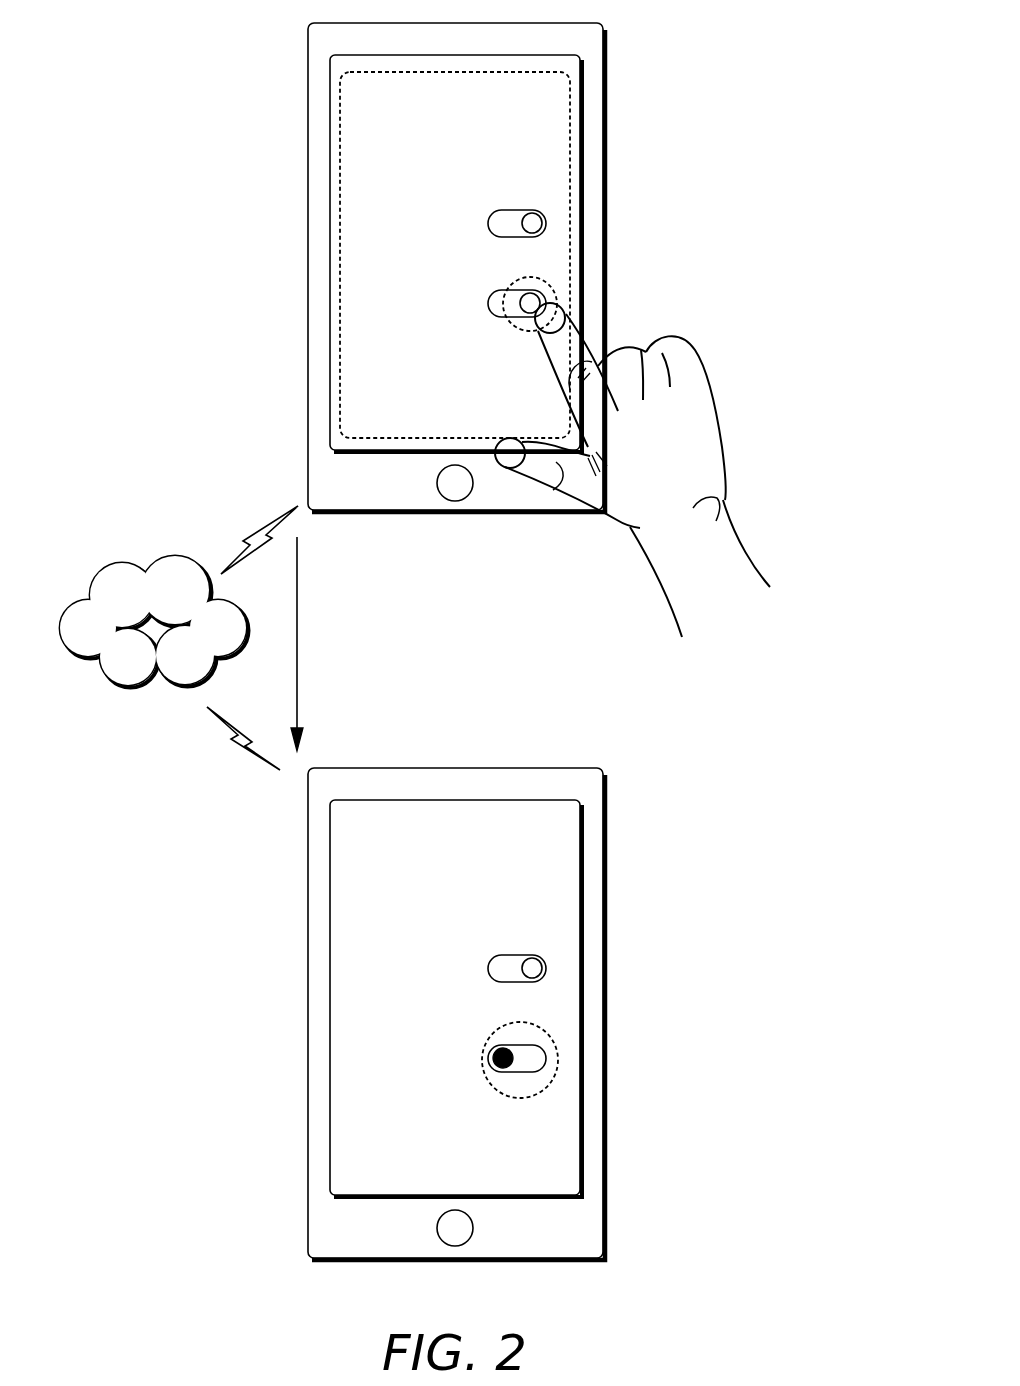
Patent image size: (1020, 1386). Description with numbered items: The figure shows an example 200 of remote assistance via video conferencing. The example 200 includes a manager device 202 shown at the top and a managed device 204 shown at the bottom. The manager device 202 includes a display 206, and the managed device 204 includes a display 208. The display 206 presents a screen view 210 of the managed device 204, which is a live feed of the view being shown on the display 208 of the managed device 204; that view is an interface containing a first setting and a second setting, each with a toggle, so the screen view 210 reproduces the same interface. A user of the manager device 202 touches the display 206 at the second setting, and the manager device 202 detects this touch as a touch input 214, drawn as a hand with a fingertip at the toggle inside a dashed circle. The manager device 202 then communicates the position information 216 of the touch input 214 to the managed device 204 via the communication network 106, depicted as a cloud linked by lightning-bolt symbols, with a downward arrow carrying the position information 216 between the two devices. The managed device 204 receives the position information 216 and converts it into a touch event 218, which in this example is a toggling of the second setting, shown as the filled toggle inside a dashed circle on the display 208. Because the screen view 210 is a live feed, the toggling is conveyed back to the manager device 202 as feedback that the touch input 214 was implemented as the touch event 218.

The example 200 is at (717, 90).
The manager device 202 is at (308, 45).
The managed device 204 is at (660, 768).
The display 206 is at (330, 135).
The display 208 is at (330, 918).
The screen view 210 is at (570, 125).
The touch input 214 is at (553, 284).
The position information 216 is at (353, 676).
The touch event 218 is at (557, 1047).
The communication network 106 is at (133, 646).